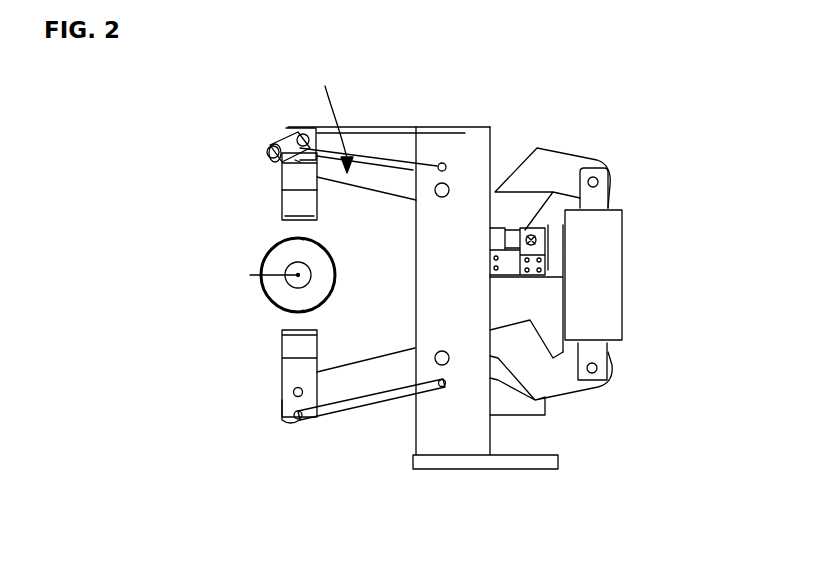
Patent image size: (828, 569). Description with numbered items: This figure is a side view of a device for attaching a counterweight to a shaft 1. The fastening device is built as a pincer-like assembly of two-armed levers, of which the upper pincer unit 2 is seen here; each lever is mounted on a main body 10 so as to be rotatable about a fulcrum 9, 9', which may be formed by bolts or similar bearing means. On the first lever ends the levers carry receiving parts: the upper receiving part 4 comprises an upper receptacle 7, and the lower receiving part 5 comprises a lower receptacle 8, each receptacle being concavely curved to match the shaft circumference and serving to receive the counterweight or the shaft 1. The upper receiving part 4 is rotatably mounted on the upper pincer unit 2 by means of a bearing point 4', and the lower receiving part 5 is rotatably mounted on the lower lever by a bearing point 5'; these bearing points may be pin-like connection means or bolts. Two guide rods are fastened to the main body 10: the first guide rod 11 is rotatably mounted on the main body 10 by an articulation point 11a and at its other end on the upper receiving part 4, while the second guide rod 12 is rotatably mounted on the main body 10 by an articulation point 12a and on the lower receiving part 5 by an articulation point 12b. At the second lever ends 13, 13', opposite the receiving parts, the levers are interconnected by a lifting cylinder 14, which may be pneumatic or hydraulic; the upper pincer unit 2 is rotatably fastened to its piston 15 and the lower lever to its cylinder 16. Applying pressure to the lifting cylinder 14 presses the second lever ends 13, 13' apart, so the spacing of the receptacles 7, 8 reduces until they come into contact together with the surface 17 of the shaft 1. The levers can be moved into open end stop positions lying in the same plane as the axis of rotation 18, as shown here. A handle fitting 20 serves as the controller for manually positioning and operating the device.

The shaft 1 is at (270, 257).
The upper pincer unit 2 is at (332, 116).
The upper receiving part 4 is at (213, 186).
The bearing point 4' is at (190, 147).
The lower receiving part 5 is at (235, 433).
The bearing point 5' is at (218, 459).
The upper receptacle 7 is at (283, 208).
The lower receptacle 8 is at (283, 372).
The fulcrum 9 is at (477, 124).
The fulcrum 9' is at (524, 439).
The main body 10 is at (481, 440).
The first guide rod 11 is at (416, 158).
The articulation point 11a is at (441, 163).
The second guide rod 12 is at (374, 404).
The articulation point 12a is at (441, 387).
The articulation point 12b is at (298, 420).
The second lever end 13 is at (552, 160).
The second lever end 13' is at (570, 403).
The lifting cylinder 14 is at (598, 275).
The piston 15 is at (598, 192).
The cylinder 16 is at (596, 338).
The surface of the shaft 17 is at (286, 313).
The axis of rotation 18 is at (262, 276).
The handle fitting 20 is at (265, 151).